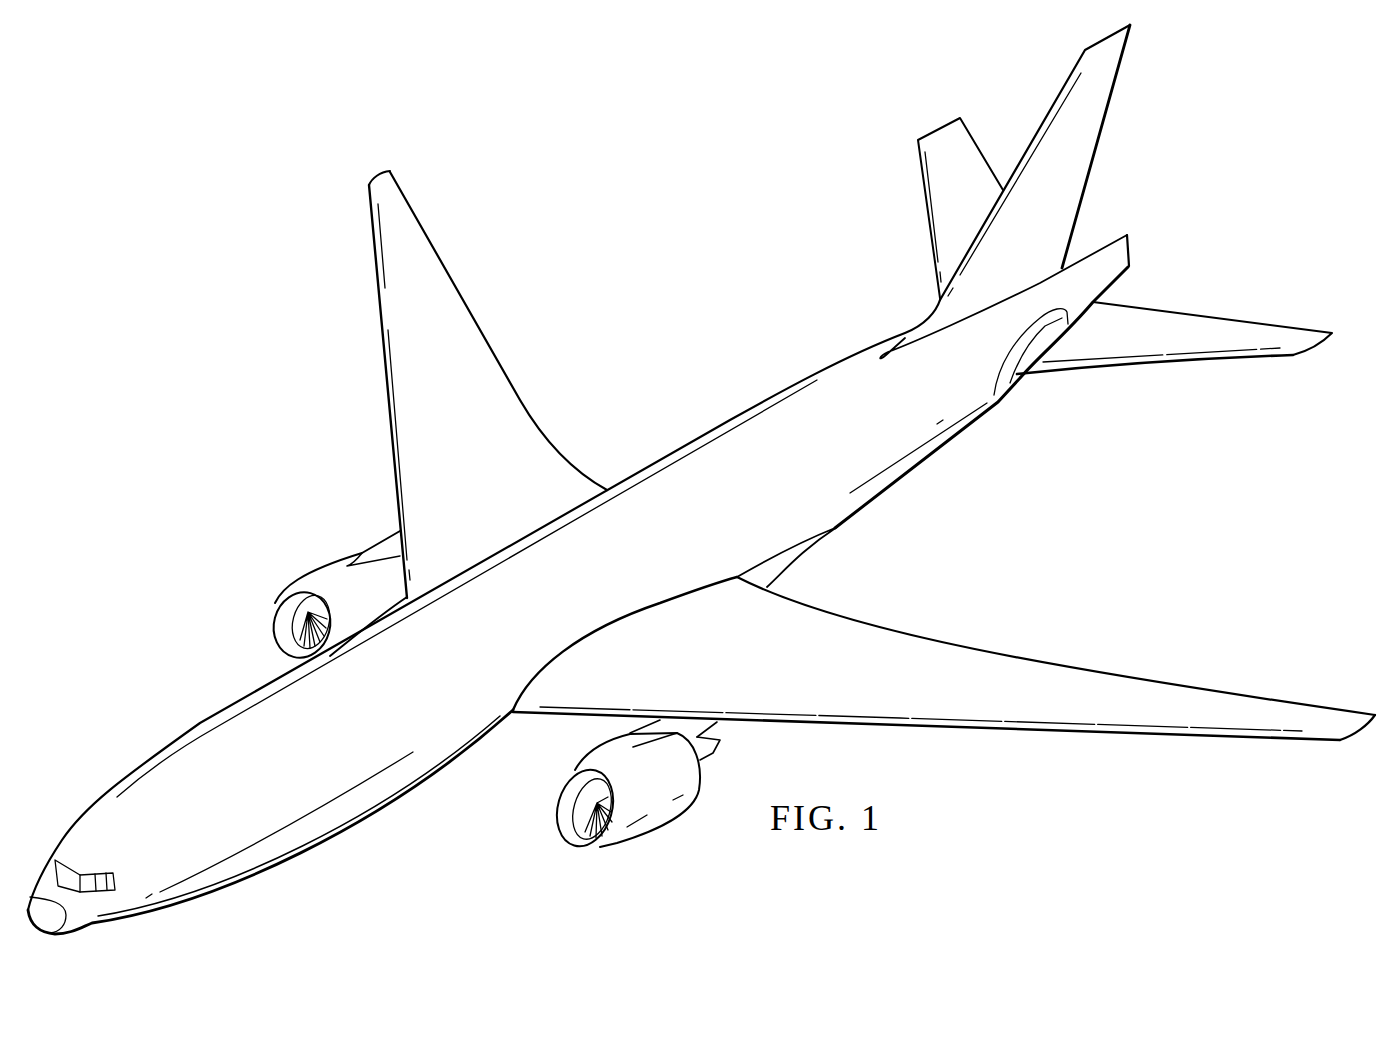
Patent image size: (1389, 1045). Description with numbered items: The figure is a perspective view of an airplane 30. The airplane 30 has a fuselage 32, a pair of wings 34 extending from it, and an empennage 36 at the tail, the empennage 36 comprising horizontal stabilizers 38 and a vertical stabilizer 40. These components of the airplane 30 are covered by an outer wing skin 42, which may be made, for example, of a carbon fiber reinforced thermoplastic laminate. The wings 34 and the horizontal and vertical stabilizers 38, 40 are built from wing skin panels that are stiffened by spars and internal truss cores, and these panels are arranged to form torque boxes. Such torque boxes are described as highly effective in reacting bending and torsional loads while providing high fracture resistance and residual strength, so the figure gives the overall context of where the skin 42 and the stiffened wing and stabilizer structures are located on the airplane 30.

The airplane 30 is at (195, 365).
The fuselage 32 is at (757, 404).
The wings 34 is at (411, 208).
The empennage 36 is at (992, 76).
The horizontal stabilizers 38 is at (920, 197).
The vertical stabilizer 40 is at (1095, 165).
The outer wing skin 42 is at (399, 322).